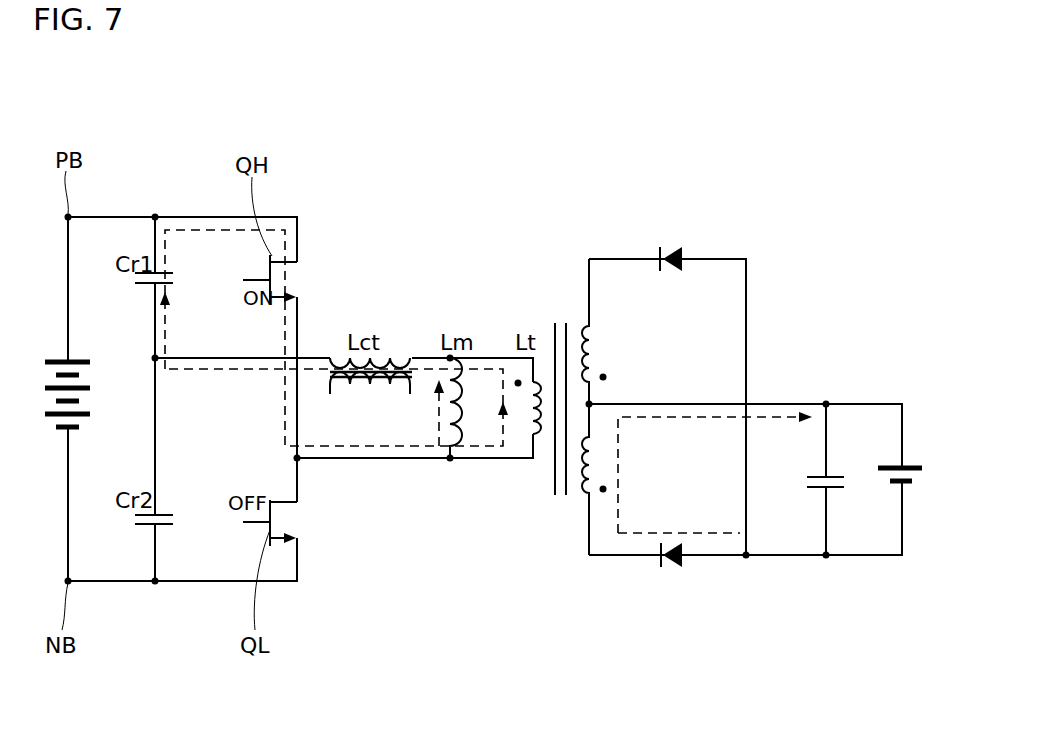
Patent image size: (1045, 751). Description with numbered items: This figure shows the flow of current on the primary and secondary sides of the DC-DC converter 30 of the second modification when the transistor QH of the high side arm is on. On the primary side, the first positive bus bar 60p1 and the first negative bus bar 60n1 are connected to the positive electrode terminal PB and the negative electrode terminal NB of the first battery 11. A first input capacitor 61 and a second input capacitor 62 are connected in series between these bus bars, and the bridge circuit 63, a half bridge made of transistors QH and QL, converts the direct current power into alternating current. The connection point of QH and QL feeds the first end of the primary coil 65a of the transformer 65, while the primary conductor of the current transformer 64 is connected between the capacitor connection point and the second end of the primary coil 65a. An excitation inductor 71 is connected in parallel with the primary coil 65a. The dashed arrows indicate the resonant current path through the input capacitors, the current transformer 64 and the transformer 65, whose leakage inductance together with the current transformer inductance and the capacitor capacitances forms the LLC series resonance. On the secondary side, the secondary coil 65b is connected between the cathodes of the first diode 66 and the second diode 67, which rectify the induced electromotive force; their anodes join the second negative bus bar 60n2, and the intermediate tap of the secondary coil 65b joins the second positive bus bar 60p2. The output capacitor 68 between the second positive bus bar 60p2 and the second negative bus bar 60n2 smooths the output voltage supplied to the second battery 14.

The first battery 11 is at (60, 361).
The second battery 14 is at (910, 466).
The DC-DC converter 30 is at (752, 145).
The first positive bus bar 60p1 is at (105, 216).
The first negative bus bar 60n1 is at (118, 583).
The second positive bus bar 60p2 is at (857, 403).
The second negative bus bar 60n2 is at (862, 557).
The first input capacitor 61 is at (172, 272).
The second input capacitor 62 is at (165, 526).
The bridge circuit 63 is at (302, 197).
The current transformer 64 is at (398, 350).
The transformer 65 is at (548, 296).
The primary coil 65a is at (543, 433).
The secondary coil 65b is at (580, 489).
The first diode 66 is at (672, 250).
The second diode 67 is at (669, 568).
The output capacitor 68 is at (820, 489).
The excitation inductor 71 is at (462, 448).